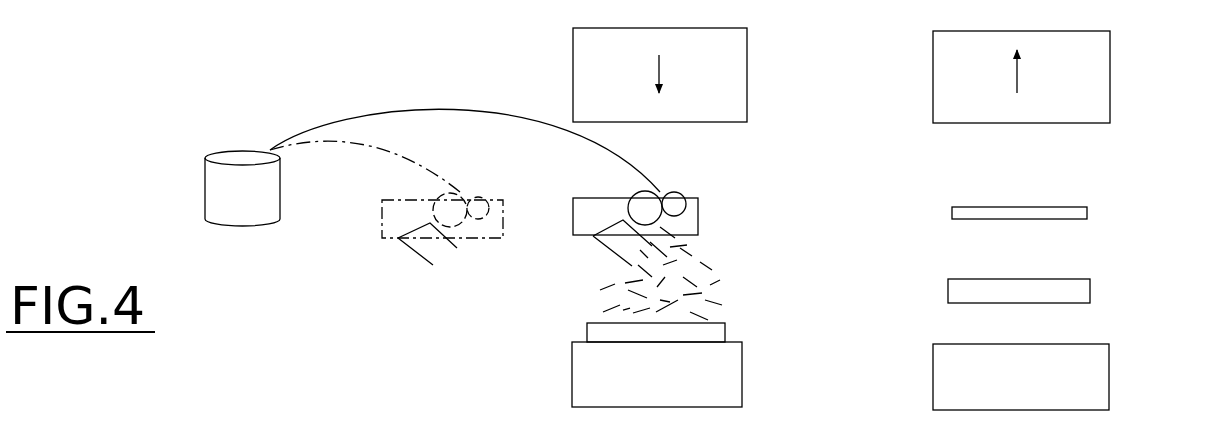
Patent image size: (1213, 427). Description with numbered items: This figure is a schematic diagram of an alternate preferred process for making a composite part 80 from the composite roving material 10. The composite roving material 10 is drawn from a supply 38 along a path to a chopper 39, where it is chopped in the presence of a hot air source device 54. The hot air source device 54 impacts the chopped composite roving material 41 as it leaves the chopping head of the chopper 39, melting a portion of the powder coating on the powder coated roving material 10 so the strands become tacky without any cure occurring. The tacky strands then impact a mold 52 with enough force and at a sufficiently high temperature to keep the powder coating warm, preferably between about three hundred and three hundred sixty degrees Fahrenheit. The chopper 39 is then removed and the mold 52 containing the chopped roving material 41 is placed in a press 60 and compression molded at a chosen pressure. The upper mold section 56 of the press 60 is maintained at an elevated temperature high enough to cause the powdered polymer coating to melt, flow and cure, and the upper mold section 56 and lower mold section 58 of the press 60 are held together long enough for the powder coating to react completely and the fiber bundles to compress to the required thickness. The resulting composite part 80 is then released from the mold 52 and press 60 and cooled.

The composite roving material 10 is at (393, 95).
The resin supply / roll 38 is at (173, 205).
The chopper 39 is at (472, 180).
The chopped composite roving material 41 is at (693, 261).
The mold 52 is at (725, 328).
The hot air source device 54 is at (413, 255).
The upper mold section 56 is at (742, 73).
The lower mold section 58 is at (738, 356).
The press 60 is at (903, 107).
The composite part 80 is at (1087, 207).